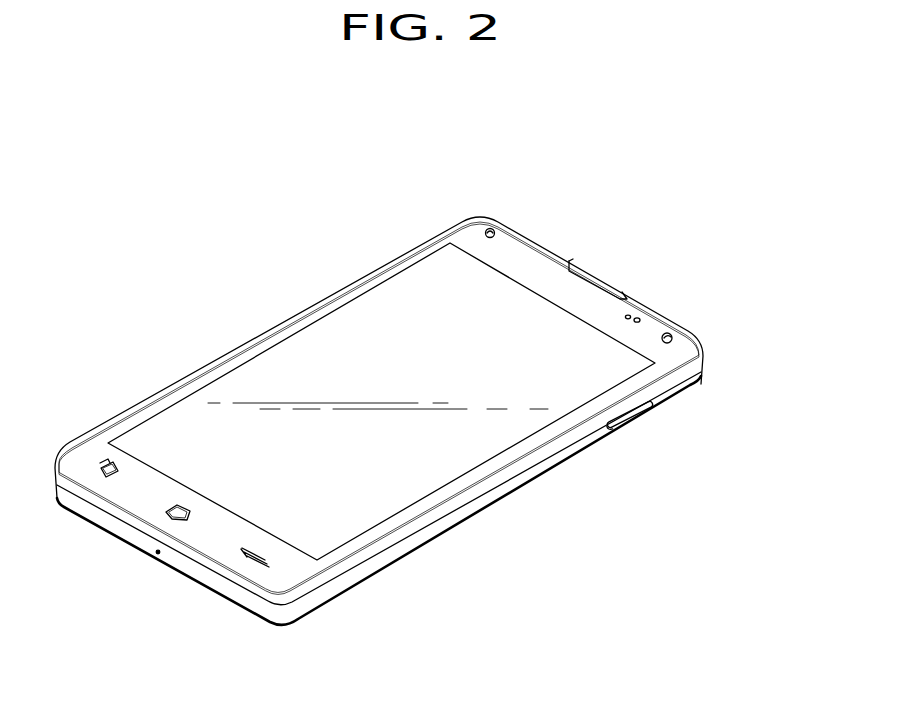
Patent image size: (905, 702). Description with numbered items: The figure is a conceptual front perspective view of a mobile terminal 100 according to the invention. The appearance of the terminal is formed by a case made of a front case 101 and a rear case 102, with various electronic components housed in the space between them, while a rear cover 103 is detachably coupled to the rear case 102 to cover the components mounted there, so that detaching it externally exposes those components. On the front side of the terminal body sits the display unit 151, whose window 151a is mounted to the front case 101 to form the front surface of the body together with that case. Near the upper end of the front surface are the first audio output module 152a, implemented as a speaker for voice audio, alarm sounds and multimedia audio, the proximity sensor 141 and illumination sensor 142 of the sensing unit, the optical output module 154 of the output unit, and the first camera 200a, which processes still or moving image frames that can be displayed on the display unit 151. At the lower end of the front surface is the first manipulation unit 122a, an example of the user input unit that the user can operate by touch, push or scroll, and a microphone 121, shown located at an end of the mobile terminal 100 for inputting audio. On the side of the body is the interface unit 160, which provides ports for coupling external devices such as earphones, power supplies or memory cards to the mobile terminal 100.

The mobile terminal 100 is at (268, 249).
The front case 101 is at (703, 360).
The rear case 102 is at (699, 377).
The rear cover 103 is at (695, 392).
The microphone 121 is at (156, 553).
The first manipulation unit 122a is at (246, 558).
The proximity sensor 141 is at (641, 318).
The illumination sensor 142 is at (630, 314).
The display unit 151 is at (252, 388).
The window 151a is at (411, 298).
The first audio output module 152a is at (592, 277).
The optical output module 154 is at (496, 231).
The interface unit 160 is at (629, 416).
The first camera 200a is at (673, 336).